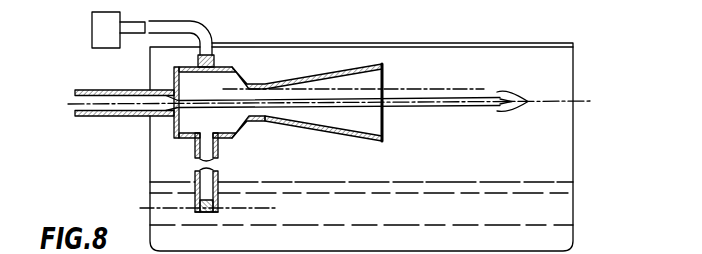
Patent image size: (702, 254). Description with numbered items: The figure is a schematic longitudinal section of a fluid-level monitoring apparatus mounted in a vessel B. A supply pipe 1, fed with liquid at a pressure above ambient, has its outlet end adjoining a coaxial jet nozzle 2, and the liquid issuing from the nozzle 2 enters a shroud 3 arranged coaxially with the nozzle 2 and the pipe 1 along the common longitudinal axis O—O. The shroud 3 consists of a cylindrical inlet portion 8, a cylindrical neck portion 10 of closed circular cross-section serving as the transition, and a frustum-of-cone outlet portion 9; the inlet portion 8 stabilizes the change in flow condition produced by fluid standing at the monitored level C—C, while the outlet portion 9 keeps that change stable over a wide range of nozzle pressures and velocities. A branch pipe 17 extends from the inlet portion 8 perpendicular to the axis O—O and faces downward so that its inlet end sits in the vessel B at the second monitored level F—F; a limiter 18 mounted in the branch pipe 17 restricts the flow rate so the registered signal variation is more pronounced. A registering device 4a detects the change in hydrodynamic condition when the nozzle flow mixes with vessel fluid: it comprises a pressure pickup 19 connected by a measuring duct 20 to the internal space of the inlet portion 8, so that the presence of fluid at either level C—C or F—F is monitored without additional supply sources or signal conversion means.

The supply pipe 1 is at (99, 118).
The jet nozzle 2 is at (172, 86).
The shroud 3 is at (172, 139).
The registering device 4a is at (213, 34).
The inlet portion 8 is at (234, 125).
The outlet portion 9 is at (323, 128).
The neck portion 10 is at (260, 87).
The branch pipe 17 is at (196, 158).
The limiter 18 is at (217, 194).
The pressure pickup 19 is at (95, 30).
The measuring duct 20 is at (198, 62).
The vessel B is at (574, 211).
The level C— C is at (353, 85).
The level F— F is at (207, 208).
The axis O— O is at (331, 102).